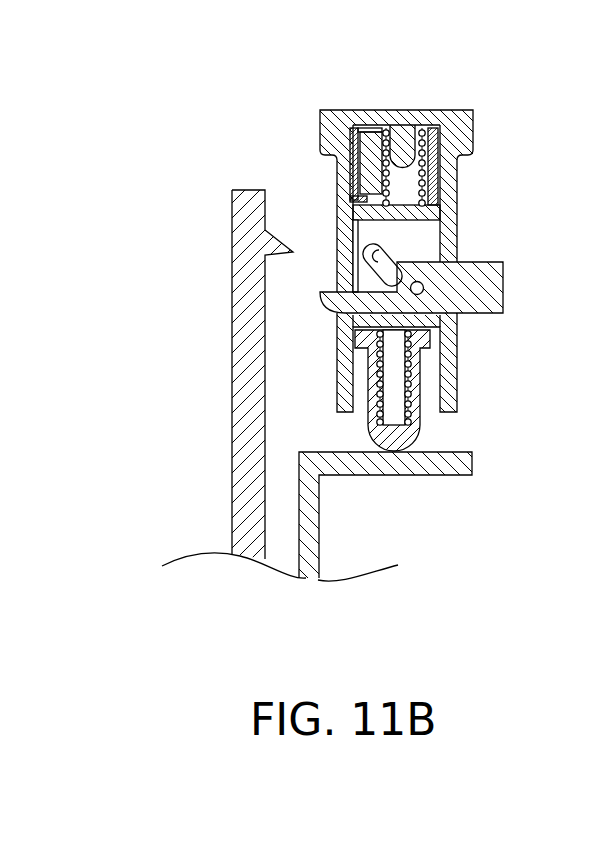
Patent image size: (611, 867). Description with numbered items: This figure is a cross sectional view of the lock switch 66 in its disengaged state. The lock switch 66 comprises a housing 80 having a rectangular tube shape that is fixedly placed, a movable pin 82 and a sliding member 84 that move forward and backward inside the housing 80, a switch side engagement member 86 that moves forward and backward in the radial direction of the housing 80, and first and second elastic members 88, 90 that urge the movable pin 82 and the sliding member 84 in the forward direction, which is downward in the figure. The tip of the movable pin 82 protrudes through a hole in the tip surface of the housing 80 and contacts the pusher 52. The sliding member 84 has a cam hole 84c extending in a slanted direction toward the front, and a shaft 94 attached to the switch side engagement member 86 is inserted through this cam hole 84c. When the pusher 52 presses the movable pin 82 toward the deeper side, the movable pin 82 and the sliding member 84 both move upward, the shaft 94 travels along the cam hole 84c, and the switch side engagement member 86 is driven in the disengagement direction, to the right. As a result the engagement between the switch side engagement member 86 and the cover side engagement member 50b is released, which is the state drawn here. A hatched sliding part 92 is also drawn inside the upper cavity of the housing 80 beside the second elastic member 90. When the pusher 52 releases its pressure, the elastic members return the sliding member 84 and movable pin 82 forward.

The lock switch 66 is at (276, 98).
The cover side engagement member 50b is at (232, 385).
The pusher 52 is at (450, 475).
The housing 80 is at (457, 400).
The movable pin 82 is at (441, 390).
The sliding member 84 is at (337, 232).
The cam hole 84c is at (393, 291).
The switch side engagement member 86 is at (451, 260).
The first elastic member 88 is at (413, 372).
The second elastic member 90 is at (445, 165).
The sliding tube 92 is at (320, 160).
The shaft 94 is at (424, 284).